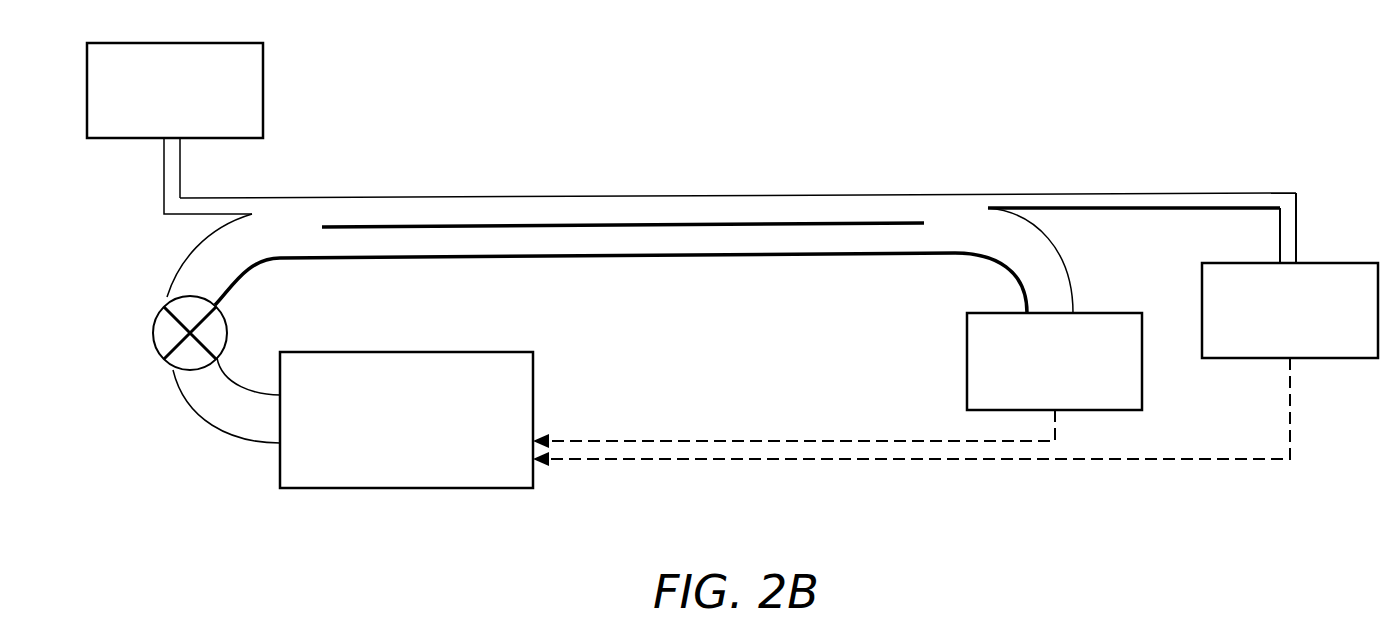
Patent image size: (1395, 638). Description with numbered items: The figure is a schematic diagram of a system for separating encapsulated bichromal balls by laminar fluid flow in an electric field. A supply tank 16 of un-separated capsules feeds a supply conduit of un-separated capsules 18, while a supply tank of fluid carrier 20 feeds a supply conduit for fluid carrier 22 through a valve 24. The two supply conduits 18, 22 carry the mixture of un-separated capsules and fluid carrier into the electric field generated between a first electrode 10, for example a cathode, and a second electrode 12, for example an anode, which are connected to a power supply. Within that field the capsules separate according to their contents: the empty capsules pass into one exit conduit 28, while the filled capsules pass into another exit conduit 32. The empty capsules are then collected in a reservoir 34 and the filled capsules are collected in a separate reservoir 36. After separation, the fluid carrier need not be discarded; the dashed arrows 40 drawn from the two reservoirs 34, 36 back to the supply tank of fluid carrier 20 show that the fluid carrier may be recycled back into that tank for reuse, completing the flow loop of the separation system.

The first electrode 10 is at (628, 195).
The second electrode 12 is at (395, 225).
The supply tank of un-separated capsules 16 is at (175, 90).
The supply conduit of un-separated capsules 18 is at (164, 167).
The supply tank of fluid carrier 20 is at (353, 420).
The supply conduit for fluid carrier 22 is at (230, 268).
The valve 24 is at (150, 332).
The exit conduit 28 is at (1165, 202).
The exit conduit 32 is at (1045, 270).
The reservoir 34 is at (1290, 310).
The reservoir 36 is at (1054, 361).
The arrows 40 is at (828, 440).